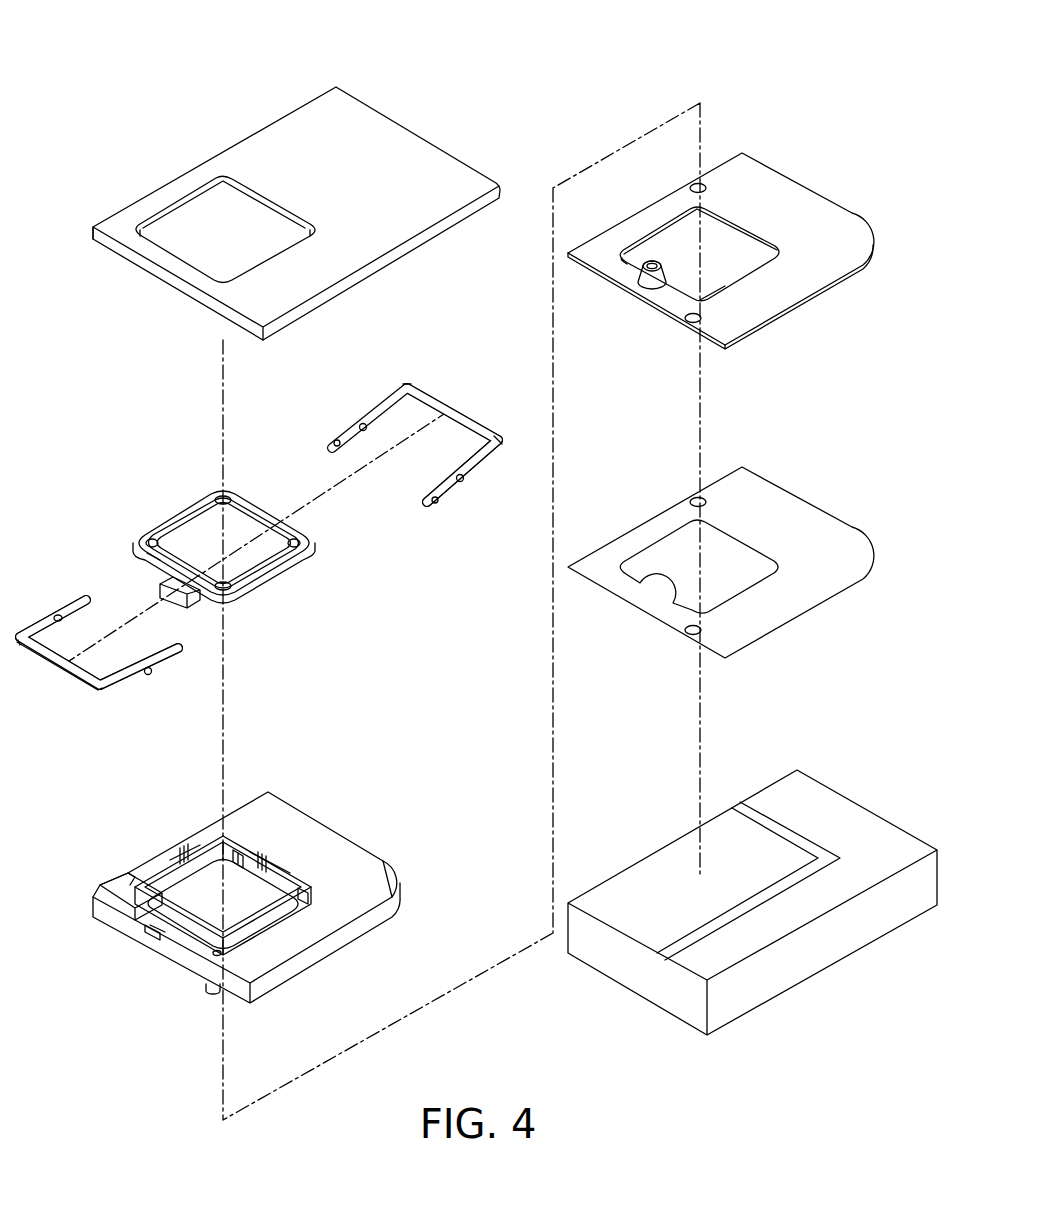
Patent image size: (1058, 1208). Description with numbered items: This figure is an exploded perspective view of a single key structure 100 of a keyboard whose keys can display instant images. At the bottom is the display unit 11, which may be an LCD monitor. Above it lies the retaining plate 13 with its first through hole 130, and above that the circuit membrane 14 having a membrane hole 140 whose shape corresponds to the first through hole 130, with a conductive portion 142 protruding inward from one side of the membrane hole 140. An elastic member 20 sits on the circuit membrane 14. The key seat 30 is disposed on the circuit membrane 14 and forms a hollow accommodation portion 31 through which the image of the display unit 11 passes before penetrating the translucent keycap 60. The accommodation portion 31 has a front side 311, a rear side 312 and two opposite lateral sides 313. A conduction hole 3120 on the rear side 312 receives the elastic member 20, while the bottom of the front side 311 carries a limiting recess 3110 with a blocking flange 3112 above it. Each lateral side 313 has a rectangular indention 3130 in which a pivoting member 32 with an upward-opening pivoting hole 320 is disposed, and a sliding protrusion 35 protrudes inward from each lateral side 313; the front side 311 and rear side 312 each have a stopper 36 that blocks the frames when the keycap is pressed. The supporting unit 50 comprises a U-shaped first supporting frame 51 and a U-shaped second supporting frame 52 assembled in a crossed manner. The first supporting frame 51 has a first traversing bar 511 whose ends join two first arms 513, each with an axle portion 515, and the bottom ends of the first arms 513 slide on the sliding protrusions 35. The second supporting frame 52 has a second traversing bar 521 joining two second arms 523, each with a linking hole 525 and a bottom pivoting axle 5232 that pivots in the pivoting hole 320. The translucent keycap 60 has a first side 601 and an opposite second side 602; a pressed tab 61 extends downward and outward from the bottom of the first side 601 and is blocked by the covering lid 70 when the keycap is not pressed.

The key structure 100 is at (790, 80).
The covering lid 70 is at (424, 145).
The circuit membrane 14 is at (721, 249).
The membrane hole 140 is at (733, 218).
The conductive portion 142 is at (672, 278).
The elastic member 20 is at (643, 278).
The retaining plate 13 is at (721, 552).
The first through hole 130 is at (746, 535).
The display unit 11 is at (864, 806).
The key seat 30 is at (256, 888).
The accommodation portion 31 is at (277, 880).
The front side 311 is at (317, 872).
The limiting recess 3110 is at (262, 895).
The blocking flange 3112 is at (283, 893).
The rear side 312 is at (203, 945).
The conduction hole 3120 is at (165, 932).
The lateral side 313 is at (213, 837).
The indention 3130 is at (200, 835).
The pivoting member 32 is at (165, 855).
The pivoting hole 320 is at (130, 875).
The sliding protrusion 35 is at (190, 878).
The stopper 36 is at (250, 848).
The supporting unit 50 is at (432, 700).
The first supporting frame 51 is at (117, 618).
The first traversing bar 511 is at (40, 657).
The first arm 513 is at (48, 613).
The axle portion 515 is at (152, 677).
The second supporting frame 52 is at (398, 445).
The second traversing bar 521 is at (450, 415).
The second arm 523 is at (480, 465).
The linking hole 525 is at (360, 423).
The pivoting axle 5232 is at (332, 440).
The translucent keycap 60 is at (207, 546).
The first side 601 is at (155, 573).
The second side 602 is at (258, 505).
The pressed tab 61 is at (187, 607).